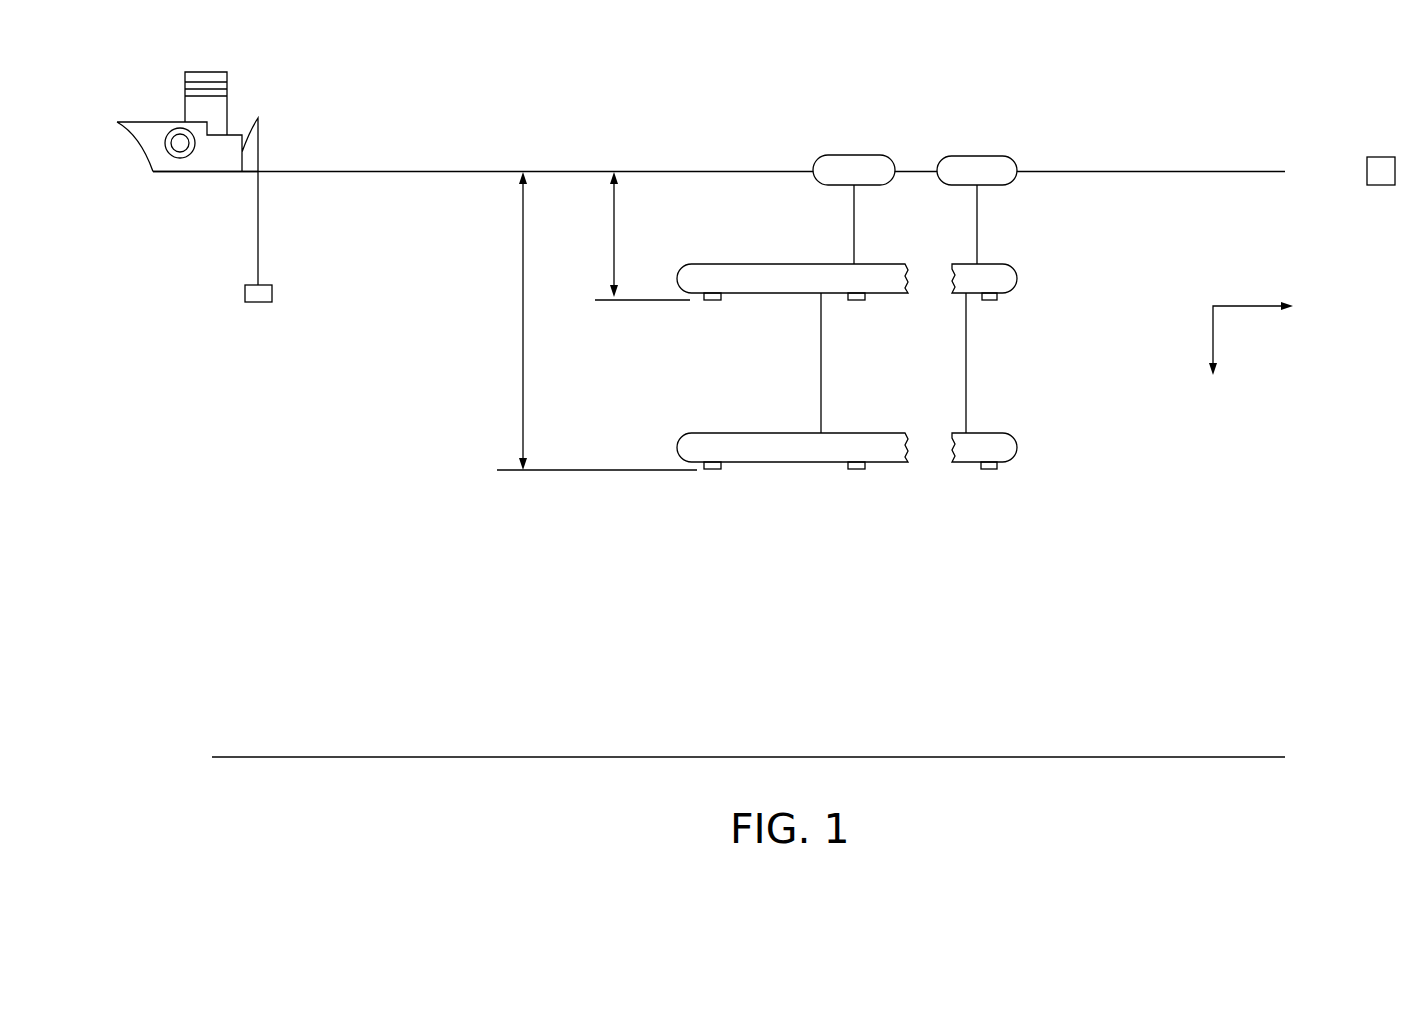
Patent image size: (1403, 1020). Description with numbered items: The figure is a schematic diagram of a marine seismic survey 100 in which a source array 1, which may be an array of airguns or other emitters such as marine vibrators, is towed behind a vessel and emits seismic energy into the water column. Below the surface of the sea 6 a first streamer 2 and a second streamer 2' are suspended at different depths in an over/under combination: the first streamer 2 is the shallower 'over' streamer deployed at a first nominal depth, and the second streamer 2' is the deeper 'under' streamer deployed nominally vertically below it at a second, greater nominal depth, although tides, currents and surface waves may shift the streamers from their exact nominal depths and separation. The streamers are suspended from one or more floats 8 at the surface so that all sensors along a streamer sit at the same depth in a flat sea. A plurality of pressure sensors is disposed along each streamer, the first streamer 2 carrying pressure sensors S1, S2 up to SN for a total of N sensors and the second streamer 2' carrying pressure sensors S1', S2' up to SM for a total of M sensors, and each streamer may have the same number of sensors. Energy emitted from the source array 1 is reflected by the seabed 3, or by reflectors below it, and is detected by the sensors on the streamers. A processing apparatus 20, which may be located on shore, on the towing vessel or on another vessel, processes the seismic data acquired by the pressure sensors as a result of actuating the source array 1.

The marine seismic survey 100 is at (640, 58).
The source array 1 is at (272, 292).
The surface of the sea 6 is at (1257, 171).
The float 8 is at (977, 155).
The processing apparatus 20 is at (1385, 157).
The first streamer 2 is at (874, 311).
The second streamer 2' is at (882, 486).
The pressure sensor S1 is at (716, 327).
The pressure sensor S2 is at (861, 327).
The pressure sensor SN is at (990, 300).
The pressure sensor S1' is at (720, 500).
The pressure sensor S2' is at (865, 500).
The pressure sensor SM is at (988, 469).
The seabed 3 is at (1160, 757).